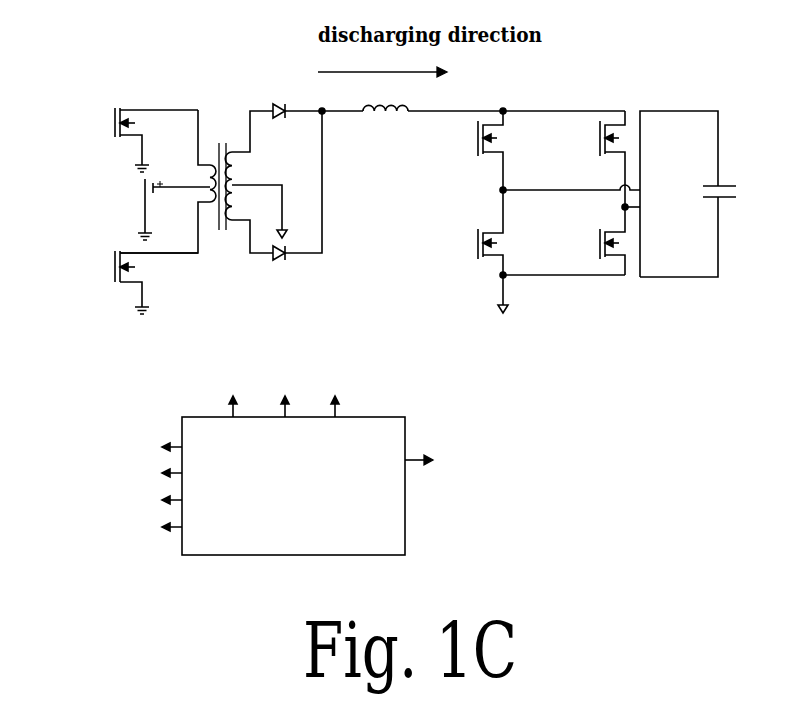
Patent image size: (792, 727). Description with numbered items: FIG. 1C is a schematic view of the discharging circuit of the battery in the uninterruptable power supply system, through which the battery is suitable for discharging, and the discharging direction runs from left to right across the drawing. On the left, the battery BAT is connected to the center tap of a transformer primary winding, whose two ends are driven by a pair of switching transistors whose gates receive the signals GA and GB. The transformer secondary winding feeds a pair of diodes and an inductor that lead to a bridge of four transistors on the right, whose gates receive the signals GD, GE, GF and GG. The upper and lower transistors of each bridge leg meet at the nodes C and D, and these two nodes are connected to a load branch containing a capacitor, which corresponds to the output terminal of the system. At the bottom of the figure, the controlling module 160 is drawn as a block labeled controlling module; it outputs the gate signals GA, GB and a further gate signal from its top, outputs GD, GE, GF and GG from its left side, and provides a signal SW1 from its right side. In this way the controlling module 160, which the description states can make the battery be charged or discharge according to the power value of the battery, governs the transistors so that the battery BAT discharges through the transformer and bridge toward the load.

The controlling module 160 is at (183, 555).
The battery BAT is at (156, 209).
The switch control signal SW1 is at (452, 460).
The transistor GA is at (115, 133).
The transistor GB is at (115, 280).
The transistor GD is at (478, 152).
The transistor GE is at (600, 152).
The transistor GF is at (478, 255).
The transistor GG is at (600, 255).
The node C is at (563, 191).
The node D is at (624, 207).